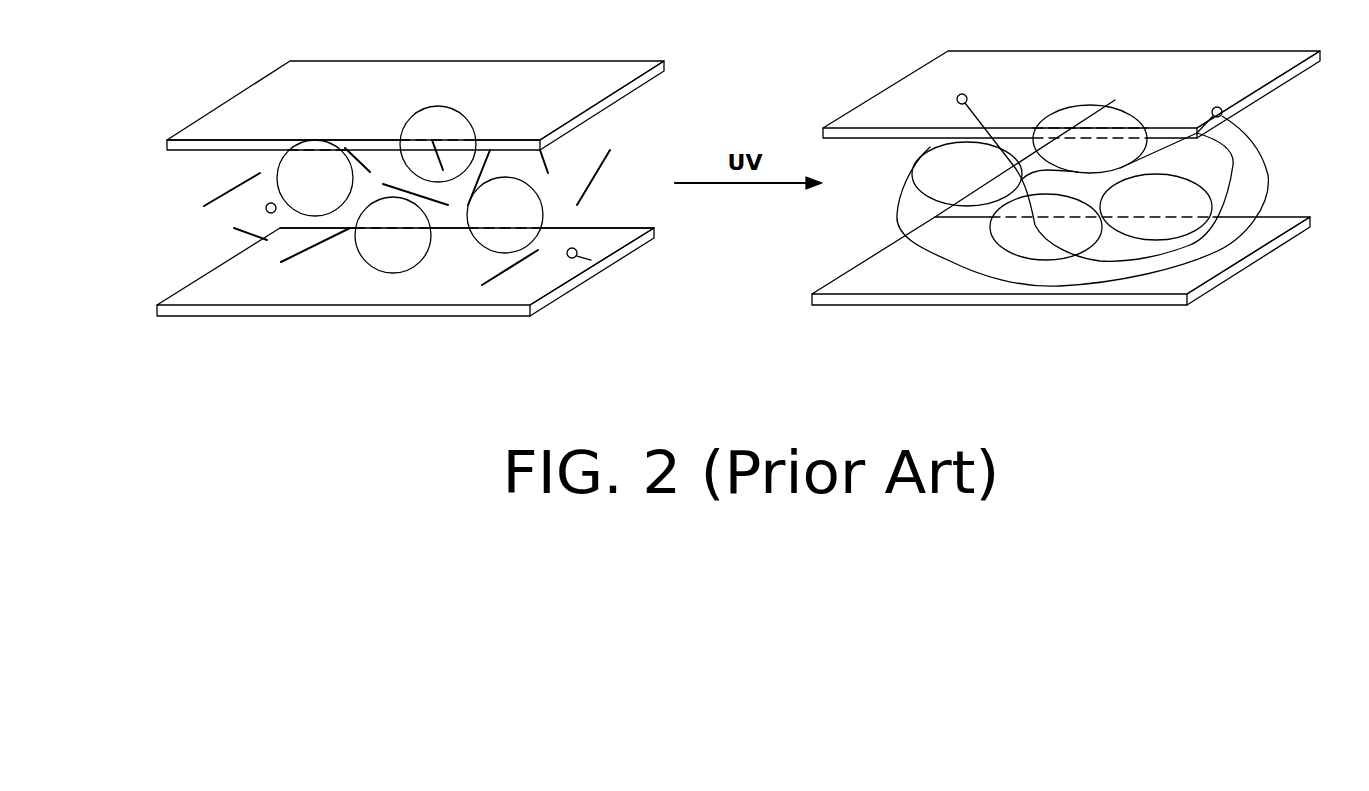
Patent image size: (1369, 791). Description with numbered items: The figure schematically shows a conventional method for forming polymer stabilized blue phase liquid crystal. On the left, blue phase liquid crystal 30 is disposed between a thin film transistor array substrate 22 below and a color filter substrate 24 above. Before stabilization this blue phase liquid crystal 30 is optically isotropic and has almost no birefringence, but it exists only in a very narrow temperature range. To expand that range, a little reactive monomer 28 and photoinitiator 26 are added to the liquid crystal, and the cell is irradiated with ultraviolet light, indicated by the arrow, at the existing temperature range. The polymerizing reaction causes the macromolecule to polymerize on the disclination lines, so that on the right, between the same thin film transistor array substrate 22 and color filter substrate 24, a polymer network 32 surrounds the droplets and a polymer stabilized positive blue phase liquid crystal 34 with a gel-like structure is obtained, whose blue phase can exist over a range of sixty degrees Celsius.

The thin film transistor array substrate 22 is at (157, 312).
The color filter substrate 24 is at (167, 143).
The photoinitiator 26 is at (576, 257).
The reactive monomer 28 is at (234, 183).
The blue phase liquid crystal 30 is at (391, 275).
The polymer network 32 is at (1266, 160).
The polymer stabilized blue phase liquid crystal 34 is at (1046, 262).